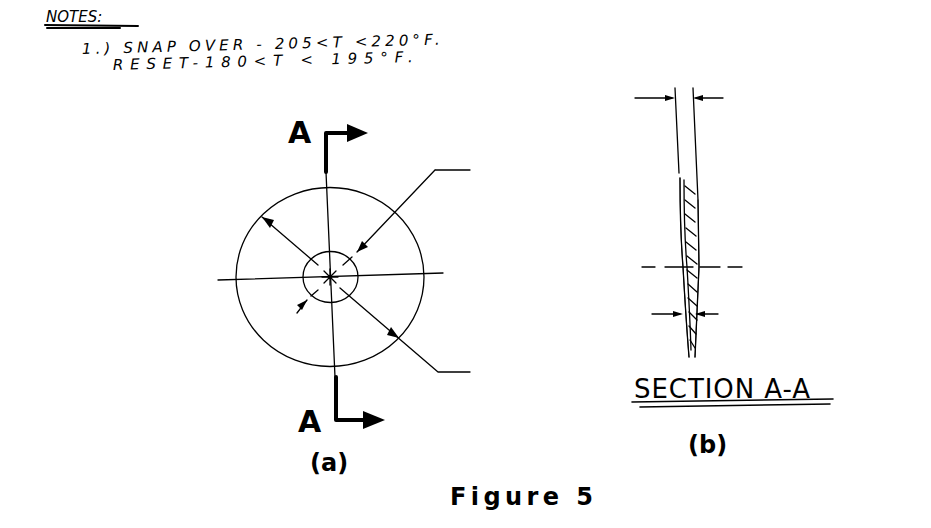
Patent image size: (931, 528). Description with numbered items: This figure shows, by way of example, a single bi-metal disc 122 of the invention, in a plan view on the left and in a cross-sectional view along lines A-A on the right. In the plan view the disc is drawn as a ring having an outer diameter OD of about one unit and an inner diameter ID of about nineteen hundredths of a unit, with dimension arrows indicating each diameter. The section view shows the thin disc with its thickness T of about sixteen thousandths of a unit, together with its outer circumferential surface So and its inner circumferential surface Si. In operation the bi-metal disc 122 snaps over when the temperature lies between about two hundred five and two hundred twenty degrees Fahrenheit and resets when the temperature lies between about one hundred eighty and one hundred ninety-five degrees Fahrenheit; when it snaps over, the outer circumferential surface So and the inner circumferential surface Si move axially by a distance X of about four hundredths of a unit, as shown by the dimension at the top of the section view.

The bi-metal disc 122 is at (240, 247).
The outer diameter OD is at (373, 304).
The inner diameter ID is at (380, 227).
The axial distance X is at (648, 95).
The outer circumferential surface So is at (682, 183).
The inner circumferential surface Si is at (700, 242).
The thickness T is at (718, 314).